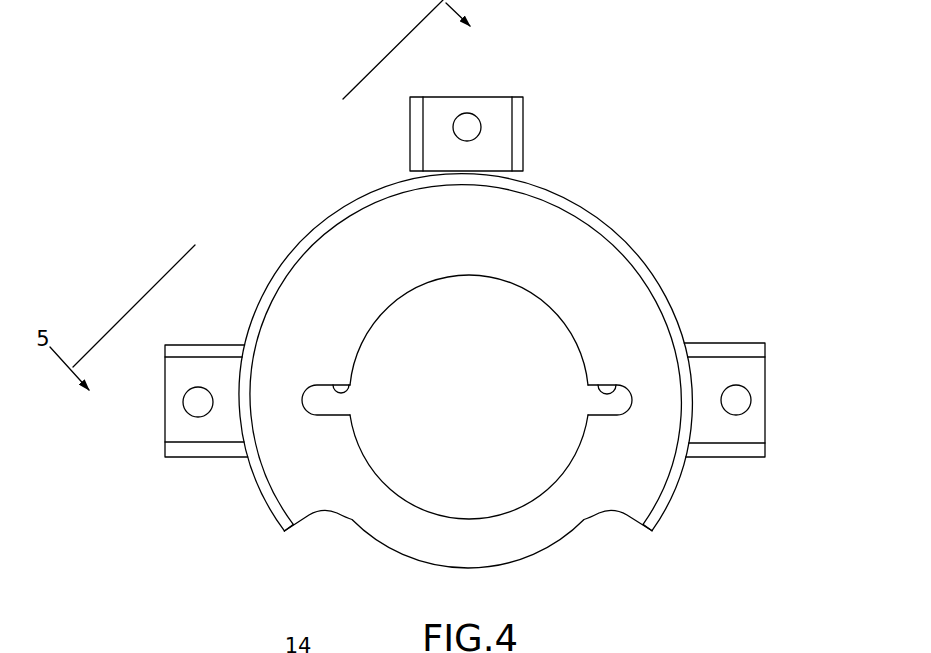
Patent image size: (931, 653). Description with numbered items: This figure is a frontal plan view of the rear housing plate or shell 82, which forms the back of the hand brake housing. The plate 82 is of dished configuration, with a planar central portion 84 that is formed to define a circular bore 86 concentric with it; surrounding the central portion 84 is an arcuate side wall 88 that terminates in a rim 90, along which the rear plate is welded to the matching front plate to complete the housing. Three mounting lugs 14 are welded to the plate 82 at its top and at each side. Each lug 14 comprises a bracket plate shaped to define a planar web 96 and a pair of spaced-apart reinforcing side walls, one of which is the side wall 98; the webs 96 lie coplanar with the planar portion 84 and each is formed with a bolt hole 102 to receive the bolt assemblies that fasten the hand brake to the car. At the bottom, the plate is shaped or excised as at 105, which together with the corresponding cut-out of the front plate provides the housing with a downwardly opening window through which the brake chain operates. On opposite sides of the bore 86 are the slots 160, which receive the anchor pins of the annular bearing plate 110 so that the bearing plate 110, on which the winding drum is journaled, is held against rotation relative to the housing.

The mounting lugs 14 is at (498, 254).
The rear housing plate or shell 82 is at (627, 235).
The planar central portion 84 is at (474, 372).
The circular bore 86 is at (527, 300).
The arcuate side wall 88 is at (556, 212).
The rim 90 is at (465, 341).
The planar web 96 is at (468, 111).
The reinforcing side wall 98 is at (413, 136).
The bolt hole 102 is at (467, 113).
The excised portion 105 is at (540, 553).
The annular bearing plate 110 is at (523, 146).
The slot 160 is at (353, 394).